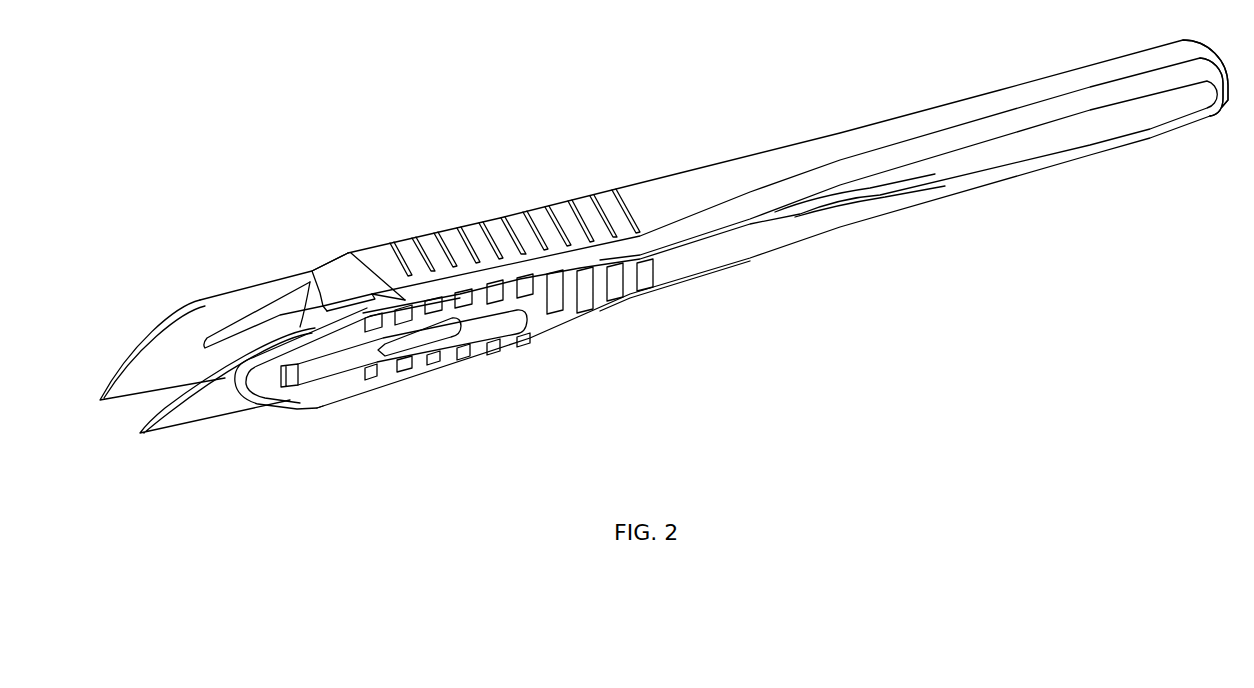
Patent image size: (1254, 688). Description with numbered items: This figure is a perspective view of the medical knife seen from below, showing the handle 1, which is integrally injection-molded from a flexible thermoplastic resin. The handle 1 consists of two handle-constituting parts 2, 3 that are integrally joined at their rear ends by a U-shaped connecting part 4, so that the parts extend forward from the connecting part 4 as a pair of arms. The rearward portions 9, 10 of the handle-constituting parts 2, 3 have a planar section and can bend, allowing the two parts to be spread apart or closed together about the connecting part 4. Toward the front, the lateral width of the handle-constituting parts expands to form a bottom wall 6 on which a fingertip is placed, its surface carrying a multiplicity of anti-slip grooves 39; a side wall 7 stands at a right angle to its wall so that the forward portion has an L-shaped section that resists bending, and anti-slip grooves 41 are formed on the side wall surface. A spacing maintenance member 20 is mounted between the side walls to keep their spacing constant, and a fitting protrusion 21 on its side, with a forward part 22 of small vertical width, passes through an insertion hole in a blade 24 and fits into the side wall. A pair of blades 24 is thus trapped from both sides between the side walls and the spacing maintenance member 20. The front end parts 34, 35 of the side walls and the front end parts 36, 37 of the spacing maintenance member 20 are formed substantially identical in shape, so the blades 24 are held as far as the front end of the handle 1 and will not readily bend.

The handle 1 is at (825, 138).
The handle-constituting part 2 is at (783, 237).
The handle-constituting part 3 is at (722, 180).
The connecting part 4 is at (1221, 110).
The bottom wall 6 is at (468, 228).
The side wall 7 is at (540, 323).
The rearward portion 9 is at (1040, 155).
The rearward portion 10 is at (1020, 92).
The spacing maintenance member 20 is at (322, 293).
The fitting protrusion 21 is at (440, 337).
The forward part 22 is at (340, 365).
The blade 24 is at (127, 373).
The front end part 34 is at (290, 400).
The front end part 35 is at (272, 282).
The front end part 36 is at (332, 300).
The front end part 37 is at (228, 332).
The anti-slip groove 39 is at (518, 222).
The anti-slip groove 41 is at (585, 302).